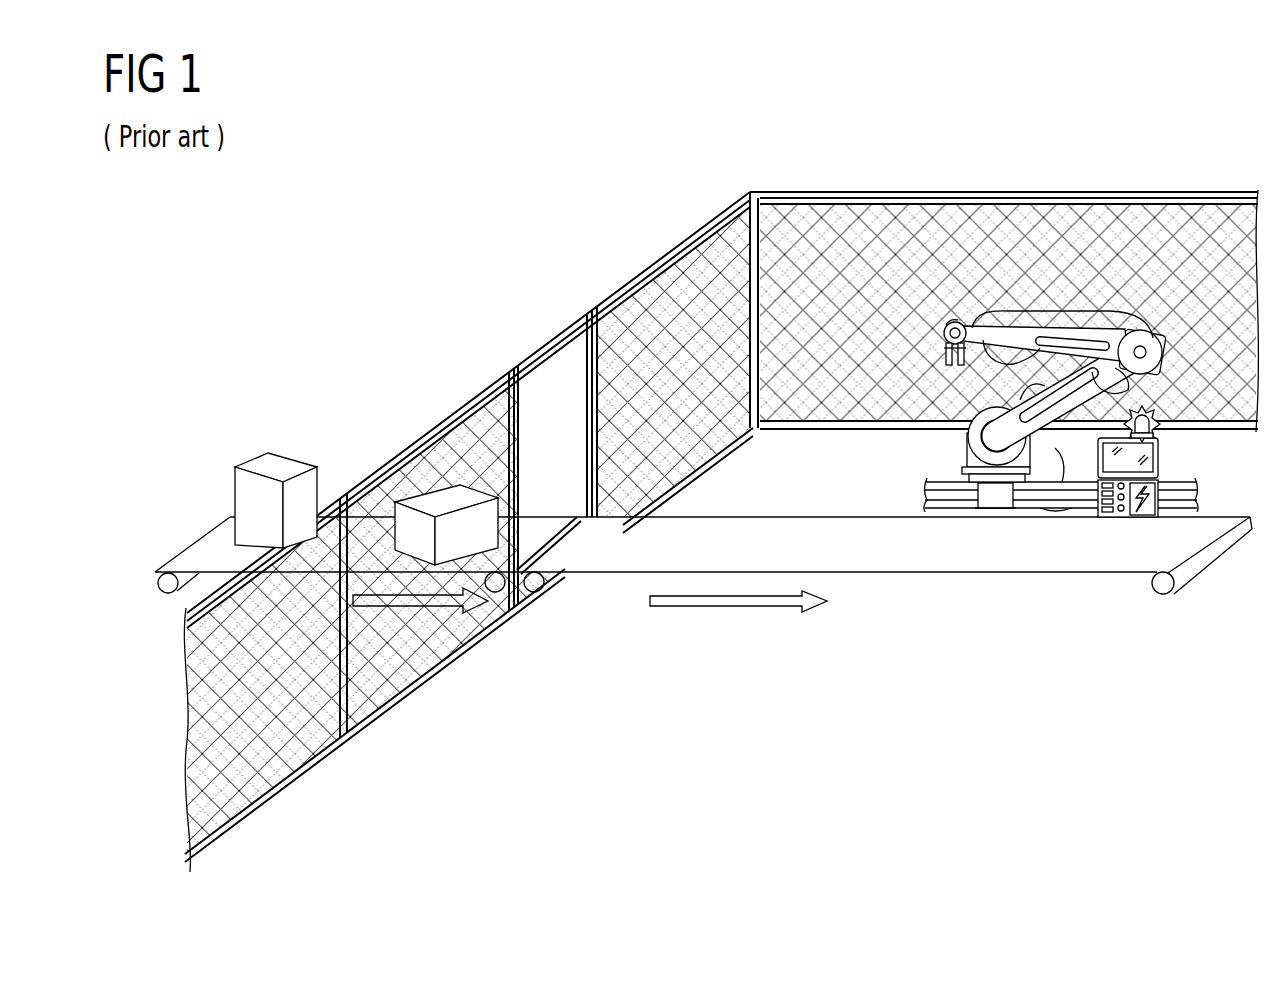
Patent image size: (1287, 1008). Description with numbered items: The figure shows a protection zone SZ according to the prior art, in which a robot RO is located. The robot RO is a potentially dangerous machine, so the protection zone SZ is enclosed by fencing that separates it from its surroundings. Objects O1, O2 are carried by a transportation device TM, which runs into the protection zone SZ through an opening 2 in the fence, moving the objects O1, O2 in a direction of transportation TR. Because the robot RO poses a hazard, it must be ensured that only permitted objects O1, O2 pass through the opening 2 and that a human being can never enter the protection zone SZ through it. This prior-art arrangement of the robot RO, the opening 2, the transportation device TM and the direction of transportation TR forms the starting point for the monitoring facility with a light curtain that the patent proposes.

The protection zone SZ is at (834, 340).
The robot RO is at (1090, 310).
The opening 2 is at (550, 398).
The object O1 is at (446, 495).
The object O2 is at (284, 460).
The transportation device TM is at (170, 550).
The direction of transportation TR is at (442, 606).